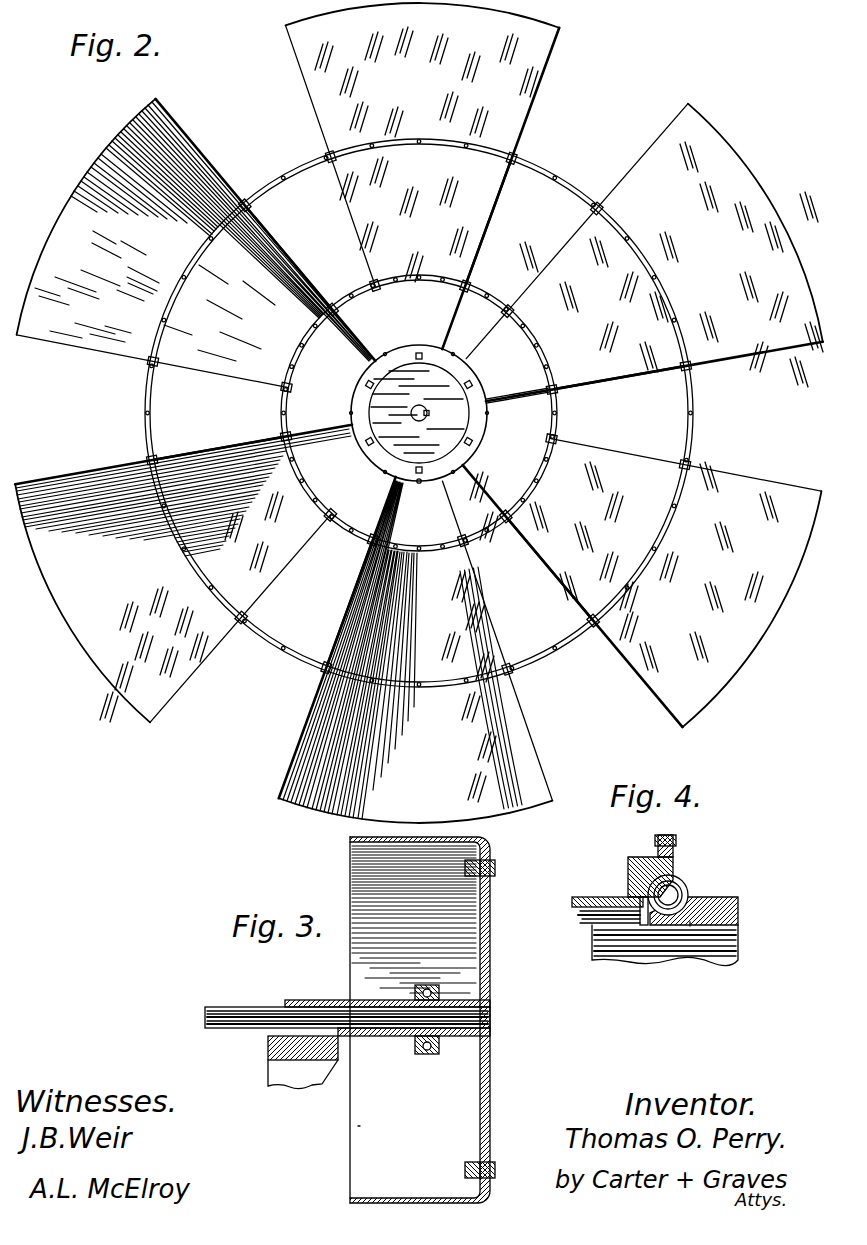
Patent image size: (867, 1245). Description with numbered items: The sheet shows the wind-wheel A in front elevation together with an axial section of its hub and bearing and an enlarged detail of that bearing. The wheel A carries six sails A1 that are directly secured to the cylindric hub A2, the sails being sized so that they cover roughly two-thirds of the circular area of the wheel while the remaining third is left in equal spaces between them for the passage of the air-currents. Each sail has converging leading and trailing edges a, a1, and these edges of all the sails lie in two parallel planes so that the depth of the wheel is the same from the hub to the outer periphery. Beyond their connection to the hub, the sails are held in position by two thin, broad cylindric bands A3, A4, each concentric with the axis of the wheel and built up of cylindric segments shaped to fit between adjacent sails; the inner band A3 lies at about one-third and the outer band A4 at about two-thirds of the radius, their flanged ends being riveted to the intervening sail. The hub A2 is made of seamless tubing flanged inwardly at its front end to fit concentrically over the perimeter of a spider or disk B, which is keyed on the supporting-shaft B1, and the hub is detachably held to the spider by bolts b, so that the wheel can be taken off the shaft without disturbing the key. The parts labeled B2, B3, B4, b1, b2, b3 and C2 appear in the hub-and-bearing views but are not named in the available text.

In FIG. 2, the wind-wheel A is at (419, 413).
In FIG. 2, the sails A1 is at (463, 208).
In FIG. 2, the hub A2 is at (488, 401).
In FIG. 2, the cylindric band A3 is at (347, 293).
In FIG. 2, the cylindric band A4 is at (278, 186).
In FIG. 2, the leading edge a is at (186, 152).
In FIG. 2, the trailing edge a1 is at (650, 153).
In FIG. 2, the spider or disk B is at (342, 410).
In FIG. 3, the spider or disk B is at (491, 1058).
In FIG. 2, the supporting-shaft B1 is at (420, 421).
In FIG. 3, the supporting-shaft B1 is at (206, 1009).
In FIG. 4, the supporting-shaft B1 is at (592, 942).
In FIG. 3, the hub plate / bearing block B2 is at (268, 1044).
In FIG. 4, the hub plate / bearing block B2 is at (572, 900).
In FIG. 4, the ball bearing B3 is at (680, 892).
In FIG. 4, the bearing cap bracket B4 is at (628, 870).
In FIG. 2, the bolts b is at (417, 483).
In FIG. 3, the bolts b is at (495, 868).
In FIG. 4, the bolt b1 is at (690, 925).
In FIG. 4, the cap bolt b2 is at (672, 862).
In FIG. 4, the bolt b3 is at (650, 925).
In FIG. 3, the hub cavity C2 is at (358, 1125).